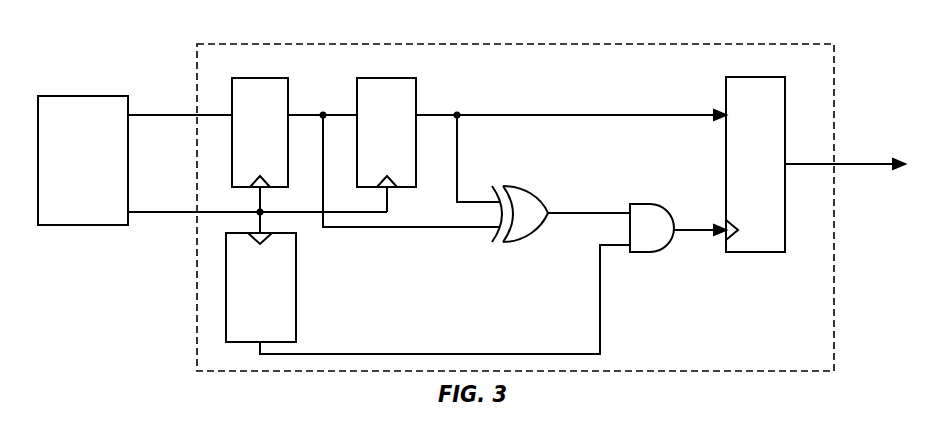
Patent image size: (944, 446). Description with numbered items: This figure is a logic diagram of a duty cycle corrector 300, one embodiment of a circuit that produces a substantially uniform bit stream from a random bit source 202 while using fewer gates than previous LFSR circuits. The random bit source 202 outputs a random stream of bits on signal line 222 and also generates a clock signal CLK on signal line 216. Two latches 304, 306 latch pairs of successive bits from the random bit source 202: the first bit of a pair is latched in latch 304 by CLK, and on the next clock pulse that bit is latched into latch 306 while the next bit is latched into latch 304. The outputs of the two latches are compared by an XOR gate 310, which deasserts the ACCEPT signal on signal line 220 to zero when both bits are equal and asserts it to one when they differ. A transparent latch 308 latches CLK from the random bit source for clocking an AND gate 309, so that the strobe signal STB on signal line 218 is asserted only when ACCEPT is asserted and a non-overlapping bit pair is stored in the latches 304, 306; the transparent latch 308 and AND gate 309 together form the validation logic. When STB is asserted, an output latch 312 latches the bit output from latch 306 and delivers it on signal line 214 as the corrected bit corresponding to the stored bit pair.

The duty cycle corrector 300 is at (808, 45).
The random bit source 202 is at (102, 95).
The signal line 222 is at (177, 115).
The signal line 216 is at (168, 213).
The latch 304 is at (265, 77).
The latch 306 is at (392, 77).
The transparent latch 308 is at (296, 284).
The XOR gate 310 is at (518, 185).
The signal line 220 is at (595, 216).
The AND gate 309 is at (650, 205).
The signal line 218 is at (692, 232).
The latch 312 is at (755, 77).
The signal line 214 is at (837, 164).